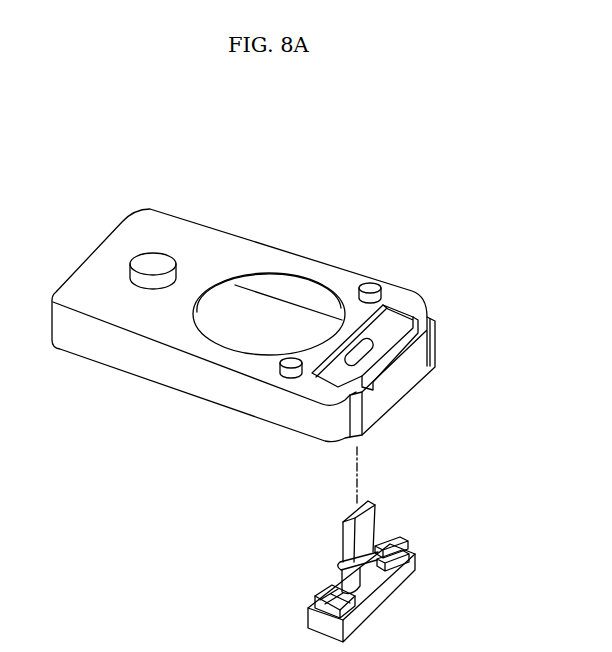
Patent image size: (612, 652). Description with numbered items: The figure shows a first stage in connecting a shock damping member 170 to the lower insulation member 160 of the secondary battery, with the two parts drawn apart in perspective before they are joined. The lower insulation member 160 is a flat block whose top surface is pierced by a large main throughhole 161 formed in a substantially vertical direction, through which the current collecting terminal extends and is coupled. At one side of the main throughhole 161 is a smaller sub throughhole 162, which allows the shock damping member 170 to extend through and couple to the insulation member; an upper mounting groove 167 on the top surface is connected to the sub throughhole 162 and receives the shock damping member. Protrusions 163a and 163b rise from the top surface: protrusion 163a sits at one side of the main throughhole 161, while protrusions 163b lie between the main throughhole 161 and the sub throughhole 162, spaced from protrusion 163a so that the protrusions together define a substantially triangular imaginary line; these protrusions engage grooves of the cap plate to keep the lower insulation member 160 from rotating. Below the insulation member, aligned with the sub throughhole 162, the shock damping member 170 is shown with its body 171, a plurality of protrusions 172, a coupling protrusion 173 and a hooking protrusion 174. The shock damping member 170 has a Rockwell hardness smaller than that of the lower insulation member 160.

The lower insulation member 160 is at (261, 302).
The main throughhole 161 is at (262, 312).
The sub throughhole 162 is at (366, 352).
The protrusion 163a is at (148, 261).
The protrusion 163b is at (371, 286).
The upper mounting groove 167 is at (394, 348).
The shock damping member 170 is at (387, 563).
The body 171 is at (385, 598).
The protrusions 172 is at (402, 551).
The coupling protrusion 173 is at (350, 581).
The hooking protrusion 174 is at (368, 528).